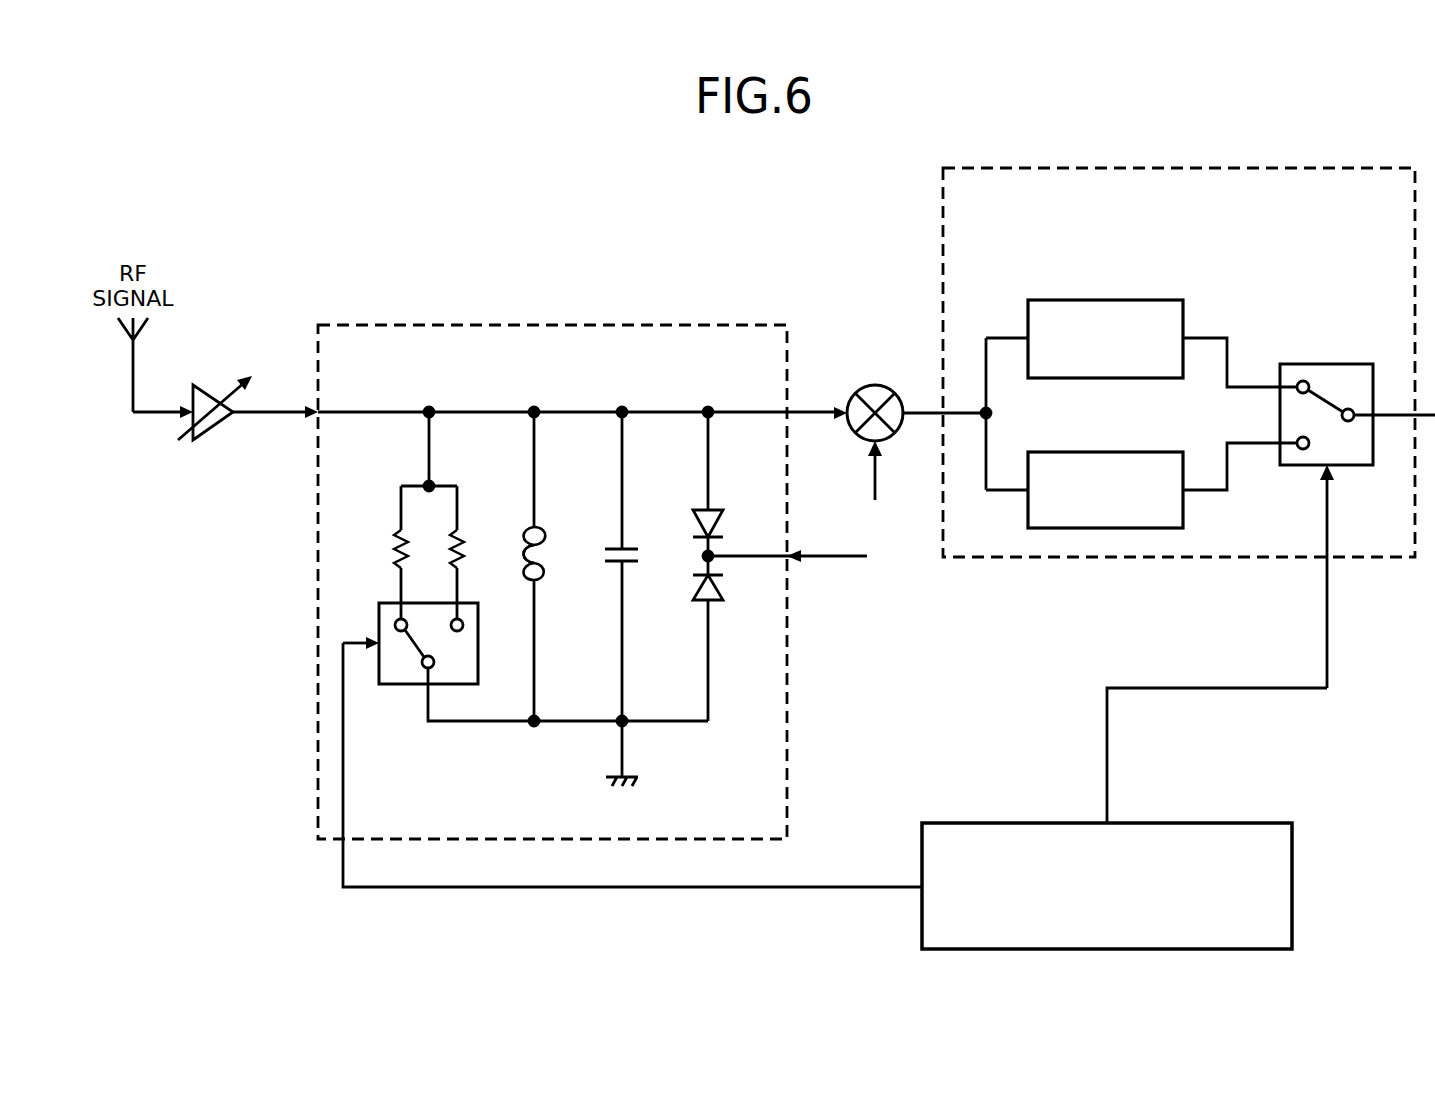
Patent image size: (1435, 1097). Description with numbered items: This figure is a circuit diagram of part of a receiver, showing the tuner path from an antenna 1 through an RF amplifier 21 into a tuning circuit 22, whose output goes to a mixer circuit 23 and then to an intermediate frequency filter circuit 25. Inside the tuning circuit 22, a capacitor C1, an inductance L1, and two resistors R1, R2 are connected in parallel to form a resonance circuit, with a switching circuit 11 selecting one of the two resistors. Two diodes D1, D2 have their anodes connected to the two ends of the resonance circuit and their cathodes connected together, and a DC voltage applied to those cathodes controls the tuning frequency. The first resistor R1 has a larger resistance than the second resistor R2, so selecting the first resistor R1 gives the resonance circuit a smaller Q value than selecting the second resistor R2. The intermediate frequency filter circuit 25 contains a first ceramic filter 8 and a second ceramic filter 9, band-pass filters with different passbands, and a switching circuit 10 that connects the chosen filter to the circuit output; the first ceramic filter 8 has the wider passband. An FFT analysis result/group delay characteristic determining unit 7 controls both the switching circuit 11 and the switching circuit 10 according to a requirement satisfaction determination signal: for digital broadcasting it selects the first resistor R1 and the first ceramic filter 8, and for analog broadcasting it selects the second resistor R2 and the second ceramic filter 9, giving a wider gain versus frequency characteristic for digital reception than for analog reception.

The antenna 1 is at (122, 338).
The RF amplifier 21 is at (212, 374).
The tuning circuit 22 is at (553, 322).
The mixer circuit 23 is at (875, 382).
The intermediate frequency filter circuit 25 is at (1178, 167).
The first ceramic filter 8 is at (1105, 299).
The second ceramic filter 9 is at (1105, 448).
The switching circuit 10 is at (1327, 362).
The FFT analysis result/group delay characteristic determining unit 7 is at (1193, 822).
The switching circuit 11 is at (393, 686).
The first resistor R1 is at (378, 574).
The second resistor R2 is at (479, 574).
The inductance L1 is at (555, 566).
The capacitor C1 is at (641, 599).
The diode D1 is at (728, 484).
The diode D2 is at (728, 638).